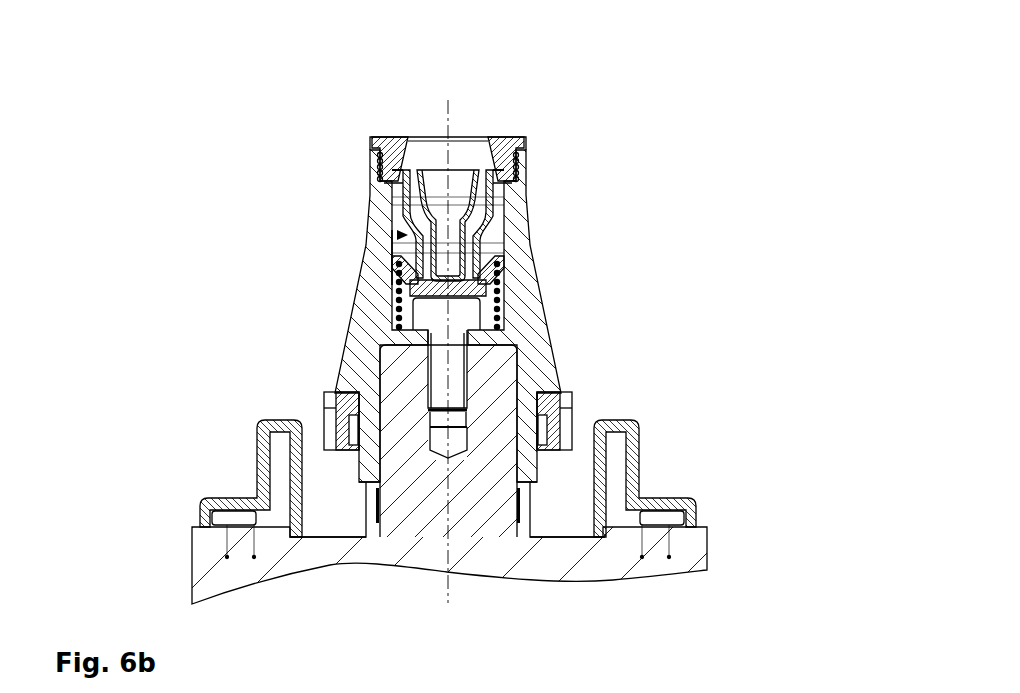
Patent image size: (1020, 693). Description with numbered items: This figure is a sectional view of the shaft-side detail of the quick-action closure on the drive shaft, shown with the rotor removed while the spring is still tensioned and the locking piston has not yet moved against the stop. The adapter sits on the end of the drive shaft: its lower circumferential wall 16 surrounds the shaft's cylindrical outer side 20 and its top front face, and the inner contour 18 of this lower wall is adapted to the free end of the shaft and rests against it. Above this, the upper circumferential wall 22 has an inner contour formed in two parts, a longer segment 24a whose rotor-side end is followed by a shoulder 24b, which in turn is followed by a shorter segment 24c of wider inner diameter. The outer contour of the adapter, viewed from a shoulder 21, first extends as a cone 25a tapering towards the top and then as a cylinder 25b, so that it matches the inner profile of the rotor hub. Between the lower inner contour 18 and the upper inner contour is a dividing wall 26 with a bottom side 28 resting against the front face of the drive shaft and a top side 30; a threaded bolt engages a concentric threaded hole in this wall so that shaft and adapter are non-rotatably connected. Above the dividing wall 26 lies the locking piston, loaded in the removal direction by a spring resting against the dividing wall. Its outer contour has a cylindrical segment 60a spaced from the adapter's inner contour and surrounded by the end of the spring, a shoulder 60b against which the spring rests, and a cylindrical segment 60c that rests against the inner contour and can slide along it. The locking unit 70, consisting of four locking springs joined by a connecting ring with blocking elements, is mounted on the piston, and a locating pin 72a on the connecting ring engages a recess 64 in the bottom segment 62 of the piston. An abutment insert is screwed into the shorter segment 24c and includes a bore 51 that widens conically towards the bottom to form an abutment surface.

The lower circumferential wall 16 is at (257, 423).
The inner contour 18 is at (392, 452).
The cylindrical outer side 20 is at (258, 460).
The shoulder 21 is at (326, 408).
The upper circumferential wall 22 is at (372, 297).
The longer segment 24a is at (385, 347).
The shoulder 24b is at (372, 195).
The shorter segment 24c is at (392, 133).
The cone 25a is at (352, 313).
The cylinder 25b is at (372, 165).
The dividing wall 26 is at (550, 322).
The bottom side 28 is at (548, 397).
The top side 30 is at (507, 338).
The bore 51 is at (473, 150).
The cylindrical segment 60a is at (500, 278).
The shoulder 60b is at (503, 247).
The cylindrical segment 60c is at (503, 222).
The bottom segment 62 is at (496, 270).
The recess 64 is at (495, 308).
The locking unit 70 is at (397, 235).
The locating pin 72a is at (396, 282).